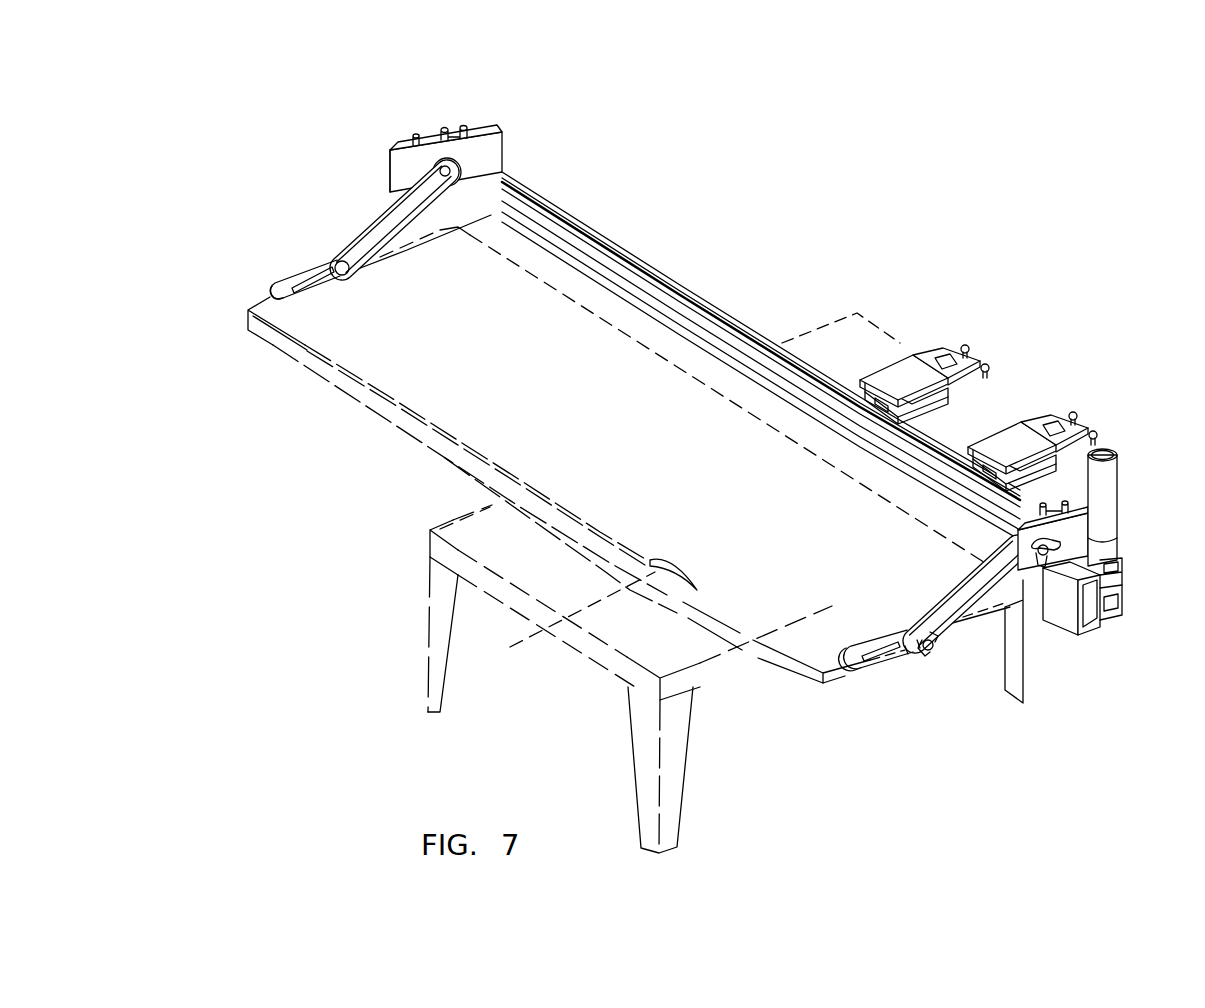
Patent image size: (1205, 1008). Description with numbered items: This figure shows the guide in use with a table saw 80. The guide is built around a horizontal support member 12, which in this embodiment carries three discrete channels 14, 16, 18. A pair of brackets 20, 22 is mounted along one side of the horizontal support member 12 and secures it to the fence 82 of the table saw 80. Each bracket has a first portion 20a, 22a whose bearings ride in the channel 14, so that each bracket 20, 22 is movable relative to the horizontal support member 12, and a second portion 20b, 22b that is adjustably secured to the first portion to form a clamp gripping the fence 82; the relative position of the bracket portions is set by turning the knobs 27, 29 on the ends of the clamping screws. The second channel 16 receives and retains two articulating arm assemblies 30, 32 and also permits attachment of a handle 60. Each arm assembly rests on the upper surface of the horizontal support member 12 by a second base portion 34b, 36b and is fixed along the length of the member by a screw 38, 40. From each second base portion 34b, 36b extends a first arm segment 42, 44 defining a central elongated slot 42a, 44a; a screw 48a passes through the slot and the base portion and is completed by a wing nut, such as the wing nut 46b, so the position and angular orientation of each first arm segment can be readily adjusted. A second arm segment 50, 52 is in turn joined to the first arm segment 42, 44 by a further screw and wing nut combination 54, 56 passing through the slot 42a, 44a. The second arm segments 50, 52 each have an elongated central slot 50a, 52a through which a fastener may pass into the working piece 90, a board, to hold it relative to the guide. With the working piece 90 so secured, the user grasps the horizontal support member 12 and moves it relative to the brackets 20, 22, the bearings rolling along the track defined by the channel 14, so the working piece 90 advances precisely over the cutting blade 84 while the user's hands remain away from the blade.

The horizontal support member 12 is at (1088, 600).
The channel 14 is at (1113, 618).
The second channel 16 is at (1117, 585).
The channel 18 is at (1087, 603).
The bracket 20 is at (993, 414).
The first portion 20a is at (1017, 433).
The second portion 20b is at (1063, 415).
The bracket 22 is at (888, 341).
The first portion 22a is at (913, 357).
The second portion 22b is at (950, 348).
The knob 27 is at (1097, 432).
The knob 29 is at (990, 366).
The arm assembly 30 is at (1060, 671).
The arm assembly 32 is at (545, 118).
The second base portion 34b is at (1007, 577).
The second base portion 36b is at (490, 160).
The screw 38 is at (1105, 535).
The screw 40 is at (470, 130).
The first arm segment 42 is at (935, 663).
The central elongated opening or slot 42a is at (955, 623).
The first arm segment 44 is at (367, 227).
The central elongated opening or slot 44a is at (420, 183).
The wing nut 46b is at (1033, 570).
The screw 48a is at (413, 140).
The second arm segment 50 is at (850, 657).
The elongated central channel or slot 50a is at (877, 650).
The second arm segment 52 is at (280, 284).
The elongated central channel or slot 52a is at (300, 277).
The screw and wing nut combination 54 is at (877, 655).
The screw and wing nut combination 56 is at (333, 253).
The handle 60 is at (1112, 545).
The table saw 80 is at (720, 672).
The fence 82 is at (820, 333).
The cutting blade 84 is at (512, 645).
The working piece 90 is at (793, 673).